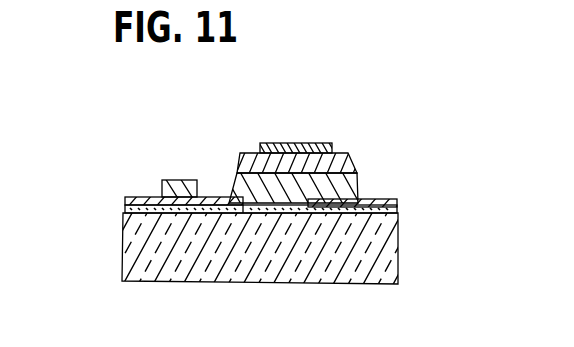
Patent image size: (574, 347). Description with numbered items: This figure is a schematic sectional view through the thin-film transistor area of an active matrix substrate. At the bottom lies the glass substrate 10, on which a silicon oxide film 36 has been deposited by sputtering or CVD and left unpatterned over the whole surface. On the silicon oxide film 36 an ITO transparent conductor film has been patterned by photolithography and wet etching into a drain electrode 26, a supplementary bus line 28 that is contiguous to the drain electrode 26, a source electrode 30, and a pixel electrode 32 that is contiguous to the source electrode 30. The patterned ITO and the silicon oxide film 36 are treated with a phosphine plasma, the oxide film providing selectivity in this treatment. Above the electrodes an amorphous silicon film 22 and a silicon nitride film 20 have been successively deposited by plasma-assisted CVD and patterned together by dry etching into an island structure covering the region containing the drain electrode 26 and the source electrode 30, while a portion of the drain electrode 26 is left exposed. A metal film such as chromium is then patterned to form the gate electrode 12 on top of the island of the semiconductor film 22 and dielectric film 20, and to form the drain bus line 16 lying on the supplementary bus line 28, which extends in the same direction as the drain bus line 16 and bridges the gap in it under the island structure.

The glass substrate 10 is at (372, 261).
The gate electrode 12 is at (290, 143).
The drain bus line 16 is at (173, 185).
The silicon nitride film 20 is at (352, 157).
The amorphous silicon film 22 is at (362, 195).
The drain electrode 26 is at (238, 213).
The supplementary bus line 28 is at (138, 197).
The source electrode 30 is at (327, 213).
The pixel electrode 32 is at (385, 199).
The silicon oxide film 36 is at (397, 210).